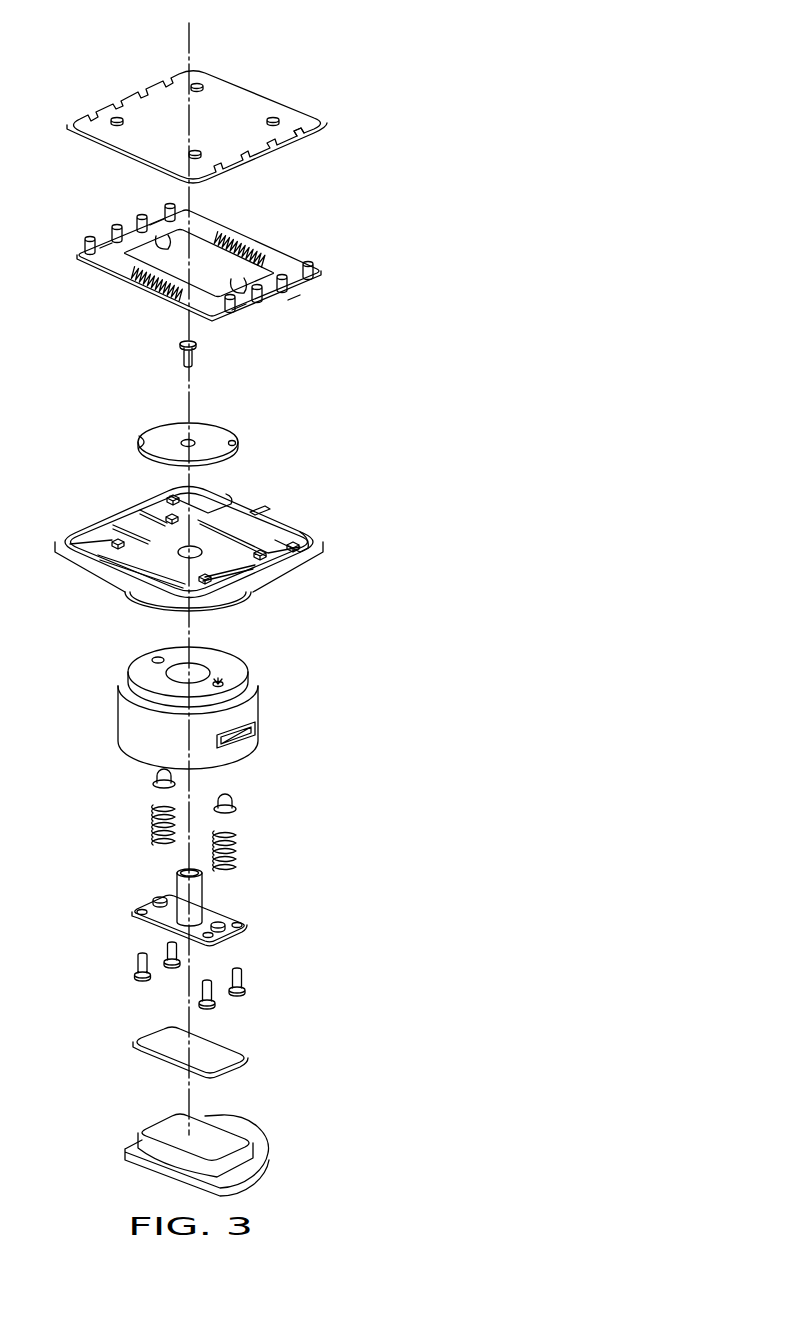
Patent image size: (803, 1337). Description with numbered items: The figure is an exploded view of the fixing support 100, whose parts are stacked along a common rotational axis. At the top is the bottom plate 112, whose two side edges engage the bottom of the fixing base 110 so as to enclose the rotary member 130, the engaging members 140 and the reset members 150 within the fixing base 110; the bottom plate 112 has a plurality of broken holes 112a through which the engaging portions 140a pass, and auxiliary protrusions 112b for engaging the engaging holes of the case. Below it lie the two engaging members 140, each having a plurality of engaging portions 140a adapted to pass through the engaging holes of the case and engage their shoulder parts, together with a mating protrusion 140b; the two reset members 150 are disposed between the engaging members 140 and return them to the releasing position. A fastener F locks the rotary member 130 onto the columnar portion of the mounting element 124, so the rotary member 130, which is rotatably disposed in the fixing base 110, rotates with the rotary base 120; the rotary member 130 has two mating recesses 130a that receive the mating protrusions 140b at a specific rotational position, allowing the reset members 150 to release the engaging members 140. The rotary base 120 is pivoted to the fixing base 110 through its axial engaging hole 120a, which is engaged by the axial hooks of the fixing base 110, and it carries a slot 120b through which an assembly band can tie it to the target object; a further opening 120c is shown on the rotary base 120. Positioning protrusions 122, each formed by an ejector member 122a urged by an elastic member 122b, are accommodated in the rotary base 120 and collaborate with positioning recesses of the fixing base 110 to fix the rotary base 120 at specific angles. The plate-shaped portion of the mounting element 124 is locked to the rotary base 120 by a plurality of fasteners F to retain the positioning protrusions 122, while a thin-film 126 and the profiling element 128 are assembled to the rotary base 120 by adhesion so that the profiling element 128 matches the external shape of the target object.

The fixing support 100 is at (411, 45).
The fixing base 110 is at (278, 517).
The bottom plate 112 is at (305, 118).
The broken hole 112a is at (317, 133).
The auxiliary protrusion 112b is at (273, 114).
The rotary base 120 is at (249, 715).
The axial engaging hole 120a is at (213, 670).
The slot 120b is at (256, 737).
The small hole of housing 120c is at (227, 679).
The positioning protrusion 122 is at (267, 820).
The ejector member 122a is at (234, 800).
The elastic member 122b is at (234, 848).
The mounting element 124 is at (227, 917).
The thin-film 126 is at (223, 1052).
The profiling element 128 is at (243, 1130).
The rotary member 130 is at (222, 436).
The mating recess 130a is at (245, 448).
The engaging member 140 is at (83, 263).
The engaging portion 140a is at (87, 242).
The mating protrusion 140b is at (148, 243).
The reset member 150 is at (240, 244).
The fastener F is at (196, 358).